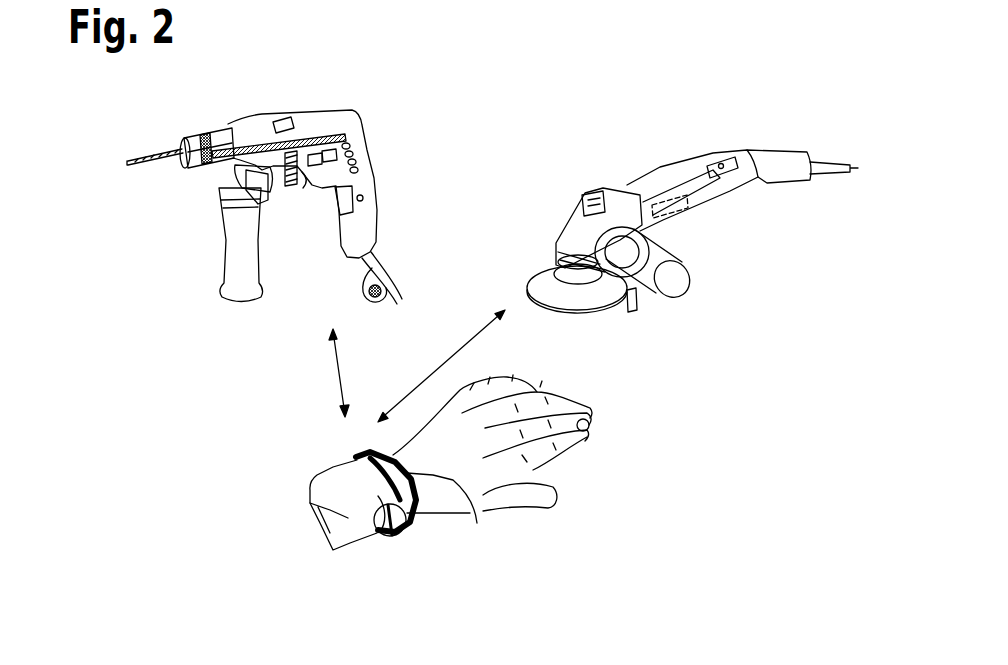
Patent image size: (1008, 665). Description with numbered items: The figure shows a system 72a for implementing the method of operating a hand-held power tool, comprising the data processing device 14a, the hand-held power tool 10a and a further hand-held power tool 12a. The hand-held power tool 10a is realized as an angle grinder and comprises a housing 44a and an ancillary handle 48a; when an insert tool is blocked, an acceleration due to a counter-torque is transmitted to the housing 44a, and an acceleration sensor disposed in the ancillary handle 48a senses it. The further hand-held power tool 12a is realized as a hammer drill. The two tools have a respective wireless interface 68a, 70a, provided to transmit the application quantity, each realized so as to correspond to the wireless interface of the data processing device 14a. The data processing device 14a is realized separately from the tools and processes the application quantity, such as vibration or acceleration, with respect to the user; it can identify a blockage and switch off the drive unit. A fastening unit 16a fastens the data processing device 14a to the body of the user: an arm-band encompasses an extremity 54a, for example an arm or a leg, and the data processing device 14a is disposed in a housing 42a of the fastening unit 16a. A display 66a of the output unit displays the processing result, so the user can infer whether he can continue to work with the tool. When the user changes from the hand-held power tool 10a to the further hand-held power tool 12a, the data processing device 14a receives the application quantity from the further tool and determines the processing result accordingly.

The hand-held power tool 10a is at (722, 163).
The further hand-held power tool 12a is at (233, 173).
The data processing device 14a is at (340, 446).
The fastening unit 16a is at (410, 513).
The housing 42a is at (380, 533).
The housing 44a is at (697, 203).
The ancillary handle 48a is at (673, 278).
The extremity 54a is at (310, 503).
The display 66a is at (477, 523).
The wireless interface 68a is at (668, 195).
The wireless interface 70a is at (322, 135).
The system 72a is at (477, 124).